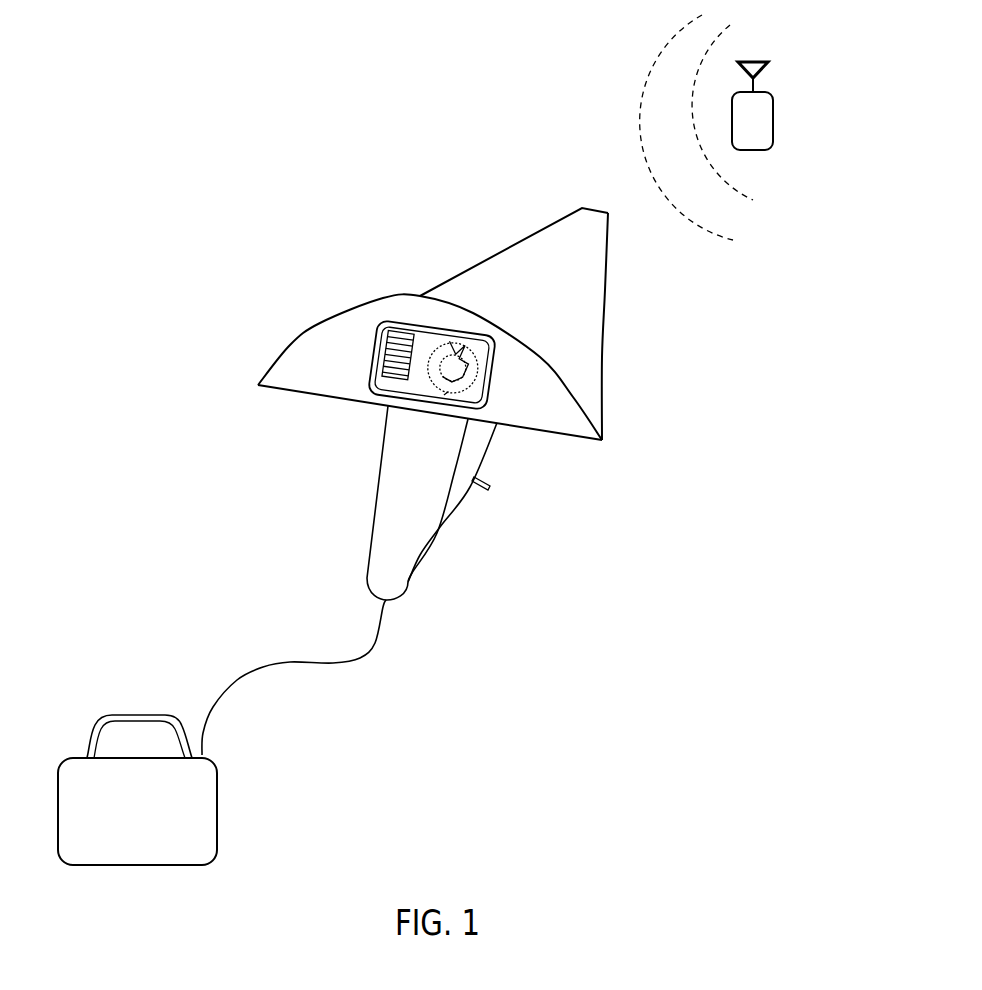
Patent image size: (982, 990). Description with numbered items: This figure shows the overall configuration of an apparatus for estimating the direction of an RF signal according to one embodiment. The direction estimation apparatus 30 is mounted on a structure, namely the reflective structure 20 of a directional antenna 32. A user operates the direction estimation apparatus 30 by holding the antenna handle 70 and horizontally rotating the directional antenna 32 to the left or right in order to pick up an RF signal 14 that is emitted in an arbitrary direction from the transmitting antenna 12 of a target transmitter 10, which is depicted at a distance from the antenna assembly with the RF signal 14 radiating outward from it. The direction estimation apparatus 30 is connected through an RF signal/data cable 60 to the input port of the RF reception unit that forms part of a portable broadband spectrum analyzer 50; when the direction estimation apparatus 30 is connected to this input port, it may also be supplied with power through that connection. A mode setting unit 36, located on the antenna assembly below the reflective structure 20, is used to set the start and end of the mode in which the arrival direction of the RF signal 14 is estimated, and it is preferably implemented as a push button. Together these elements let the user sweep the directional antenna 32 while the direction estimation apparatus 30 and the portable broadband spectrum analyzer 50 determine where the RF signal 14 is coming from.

The target transmitter 10 is at (774, 118).
The transmitting antenna 12 is at (763, 65).
The RF signal 14 is at (747, 202).
The reflective structure 20 is at (308, 318).
The direction estimation apparatus 30 is at (395, 320).
The directional antenna 32 is at (495, 255).
The mode setting unit 36 is at (493, 485).
The portable broadband spectrum analyzer 50 is at (217, 807).
The RF signal/data cable 60 is at (283, 662).
The antenna handle 70 is at (438, 518).